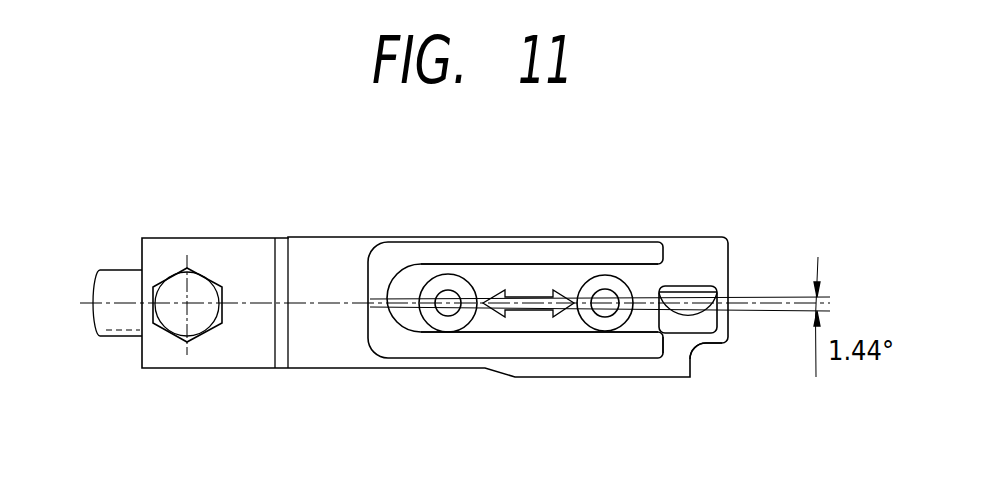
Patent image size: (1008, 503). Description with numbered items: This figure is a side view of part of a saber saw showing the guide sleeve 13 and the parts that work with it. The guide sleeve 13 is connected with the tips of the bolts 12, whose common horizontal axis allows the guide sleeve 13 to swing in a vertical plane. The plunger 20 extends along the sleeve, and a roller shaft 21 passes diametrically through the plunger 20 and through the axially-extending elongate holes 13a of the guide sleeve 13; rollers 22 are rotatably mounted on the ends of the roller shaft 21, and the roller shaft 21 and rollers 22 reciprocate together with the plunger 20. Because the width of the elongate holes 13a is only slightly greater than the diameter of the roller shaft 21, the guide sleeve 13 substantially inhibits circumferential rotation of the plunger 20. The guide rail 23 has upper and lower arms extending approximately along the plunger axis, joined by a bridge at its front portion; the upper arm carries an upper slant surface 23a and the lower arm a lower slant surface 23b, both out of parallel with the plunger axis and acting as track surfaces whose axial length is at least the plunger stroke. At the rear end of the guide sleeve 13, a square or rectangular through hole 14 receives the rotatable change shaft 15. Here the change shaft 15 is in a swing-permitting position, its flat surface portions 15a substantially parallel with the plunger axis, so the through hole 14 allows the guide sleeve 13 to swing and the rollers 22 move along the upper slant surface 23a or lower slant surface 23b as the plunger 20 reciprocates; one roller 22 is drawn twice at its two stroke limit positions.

The bolt 12 is at (175, 283).
The guide sleeve 13 is at (250, 247).
The elongate hole 13a is at (530, 318).
The through hole 14 is at (675, 335).
The change shaft 15 is at (706, 346).
The flat surface portion 15a is at (683, 298).
The plunger 20 is at (120, 280).
The roller shaft 21 is at (458, 292).
The roller 22 is at (440, 283).
The guide rail 23 is at (622, 243).
The upper slant surface 23a is at (538, 263).
The lower slant surface 23b is at (480, 345).